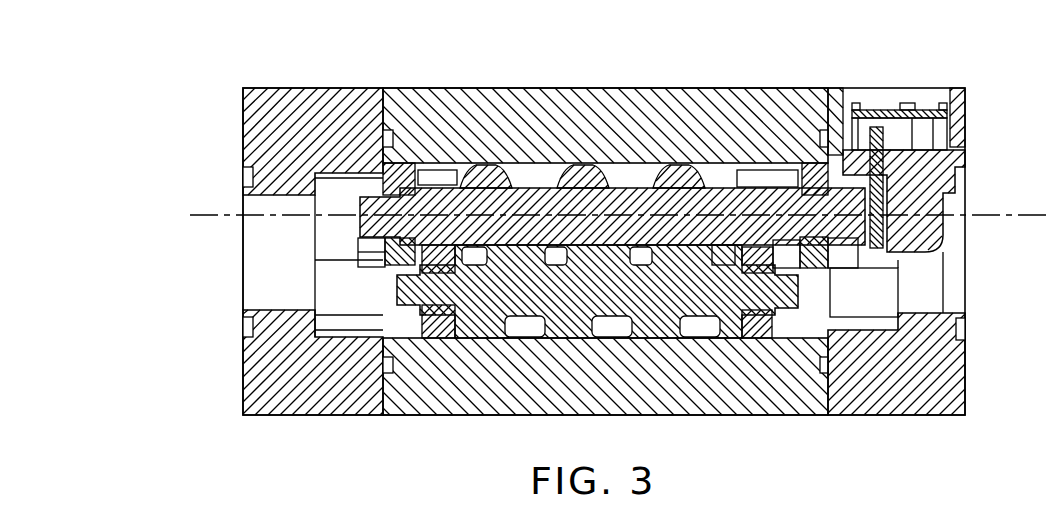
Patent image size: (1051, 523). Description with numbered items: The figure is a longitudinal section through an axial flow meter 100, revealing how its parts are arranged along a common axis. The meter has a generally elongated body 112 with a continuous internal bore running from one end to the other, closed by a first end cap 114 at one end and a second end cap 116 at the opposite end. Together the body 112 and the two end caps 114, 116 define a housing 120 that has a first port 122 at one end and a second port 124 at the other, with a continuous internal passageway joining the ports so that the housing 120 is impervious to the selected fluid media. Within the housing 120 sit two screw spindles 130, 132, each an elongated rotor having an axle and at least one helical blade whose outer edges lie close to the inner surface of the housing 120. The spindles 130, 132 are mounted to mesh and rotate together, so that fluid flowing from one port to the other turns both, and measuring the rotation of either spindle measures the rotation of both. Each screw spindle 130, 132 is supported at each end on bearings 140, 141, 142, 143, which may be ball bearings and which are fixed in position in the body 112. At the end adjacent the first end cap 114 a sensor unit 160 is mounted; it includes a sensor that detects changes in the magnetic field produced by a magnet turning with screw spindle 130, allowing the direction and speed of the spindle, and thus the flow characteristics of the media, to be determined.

The axial flow meter 100 is at (654, 76).
The body 112 is at (450, 86).
The first end cap 114 is at (967, 138).
The second end cap 116 is at (287, 88).
The housing 120 is at (898, 252).
The first port 122 is at (243, 243).
The second port 124 is at (963, 288).
The screw spindle 130 is at (570, 188).
The screw spindle 132 is at (487, 340).
The bearing 140 is at (400, 163).
The bearing 141 is at (427, 340).
The bearing 142 is at (760, 337).
The bearing 143 is at (822, 180).
The sensor unit 160 is at (920, 105).